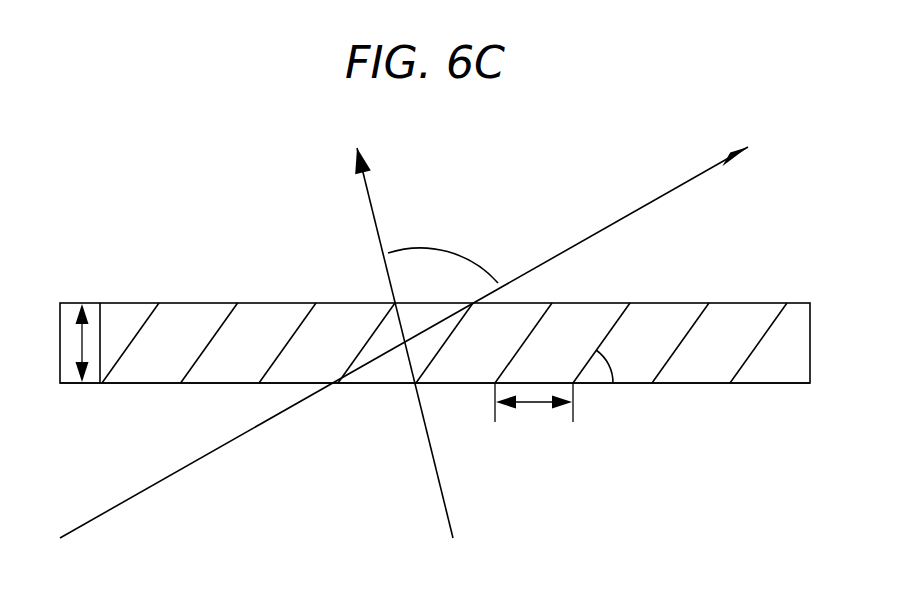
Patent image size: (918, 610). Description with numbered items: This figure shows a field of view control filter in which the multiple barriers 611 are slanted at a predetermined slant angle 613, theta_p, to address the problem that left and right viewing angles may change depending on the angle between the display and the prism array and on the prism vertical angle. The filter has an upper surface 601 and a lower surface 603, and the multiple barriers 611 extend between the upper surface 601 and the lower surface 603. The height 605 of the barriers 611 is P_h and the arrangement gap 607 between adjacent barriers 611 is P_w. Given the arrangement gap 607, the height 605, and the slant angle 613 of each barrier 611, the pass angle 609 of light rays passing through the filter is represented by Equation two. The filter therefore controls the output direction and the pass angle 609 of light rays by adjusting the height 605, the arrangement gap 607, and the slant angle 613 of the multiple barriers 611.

The upper surface 601 is at (688, 303).
The lower surface 603 is at (768, 384).
The height 605 is at (75, 345).
The arrangement gap 607 is at (537, 405).
The pass angle 609 is at (448, 212).
The barriers 611 is at (204, 348).
The tilt angle theta_p of polarizer element 613 is at (630, 347).